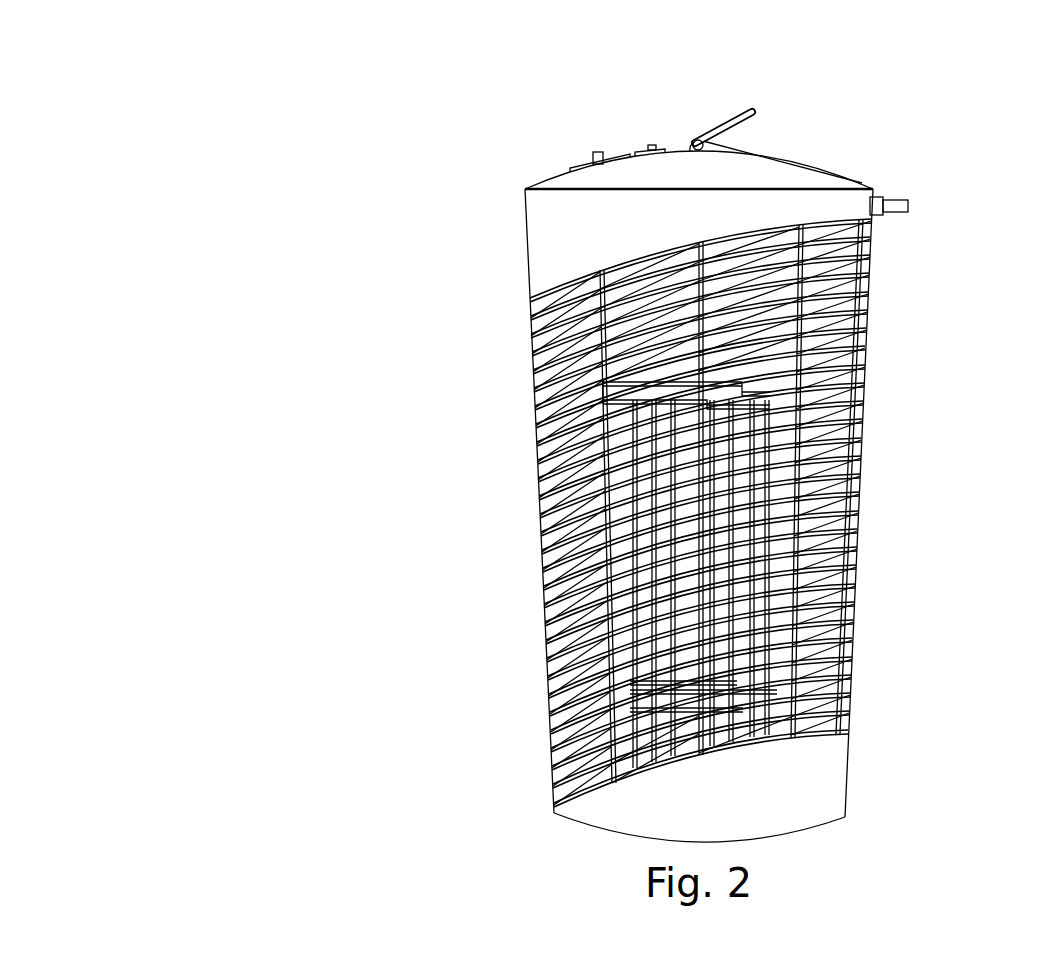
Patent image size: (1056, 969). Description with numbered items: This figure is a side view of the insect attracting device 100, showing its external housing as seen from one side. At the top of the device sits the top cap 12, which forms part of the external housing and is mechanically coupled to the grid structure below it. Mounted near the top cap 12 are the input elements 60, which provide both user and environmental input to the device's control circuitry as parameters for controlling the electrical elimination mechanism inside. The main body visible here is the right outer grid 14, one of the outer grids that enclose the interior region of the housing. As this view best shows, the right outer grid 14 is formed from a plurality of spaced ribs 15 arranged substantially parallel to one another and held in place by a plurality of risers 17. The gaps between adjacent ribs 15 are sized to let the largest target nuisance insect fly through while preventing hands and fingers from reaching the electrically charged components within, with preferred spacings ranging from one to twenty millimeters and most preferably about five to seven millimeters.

The insect attracting device 100 is at (217, 100).
The input elements 60 is at (563, 131).
The top cap 12 is at (832, 187).
The right outer grid 14 is at (899, 394).
The ribs 15 is at (857, 510).
The risers 17 is at (855, 568).